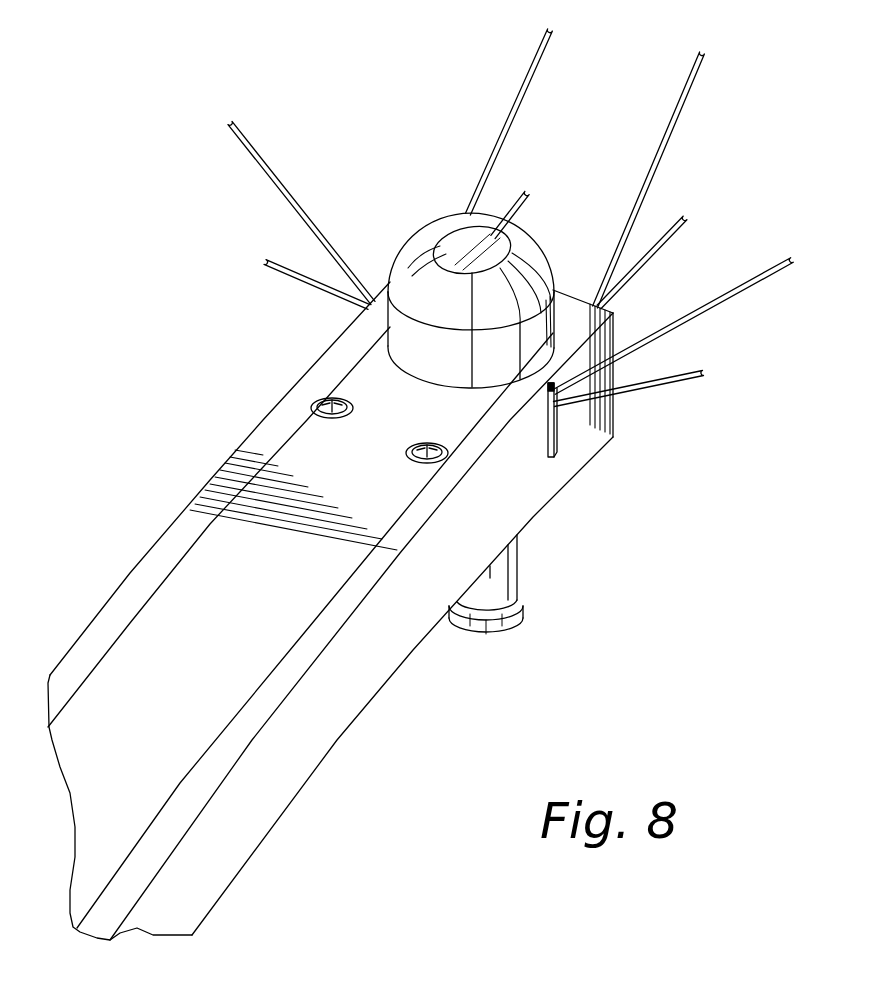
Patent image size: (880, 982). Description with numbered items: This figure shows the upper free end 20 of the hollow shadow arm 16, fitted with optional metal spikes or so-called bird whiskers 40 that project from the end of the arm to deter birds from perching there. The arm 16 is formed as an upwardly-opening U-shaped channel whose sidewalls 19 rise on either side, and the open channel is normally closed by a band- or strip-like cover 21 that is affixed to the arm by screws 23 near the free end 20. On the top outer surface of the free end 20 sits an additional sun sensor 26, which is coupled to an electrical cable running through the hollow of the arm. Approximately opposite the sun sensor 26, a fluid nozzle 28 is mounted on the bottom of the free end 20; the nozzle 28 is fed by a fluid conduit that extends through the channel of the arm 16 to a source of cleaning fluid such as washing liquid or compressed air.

The arm 16 is at (173, 520).
The sidewalls 19 is at (130, 592).
The cover 21 is at (206, 667).
The free end 20 is at (600, 447).
The screws 23 is at (424, 443).
The sun sensor 26 is at (483, 248).
The fluid nozzle 28 is at (510, 555).
The bird whiskers 40 is at (278, 266).